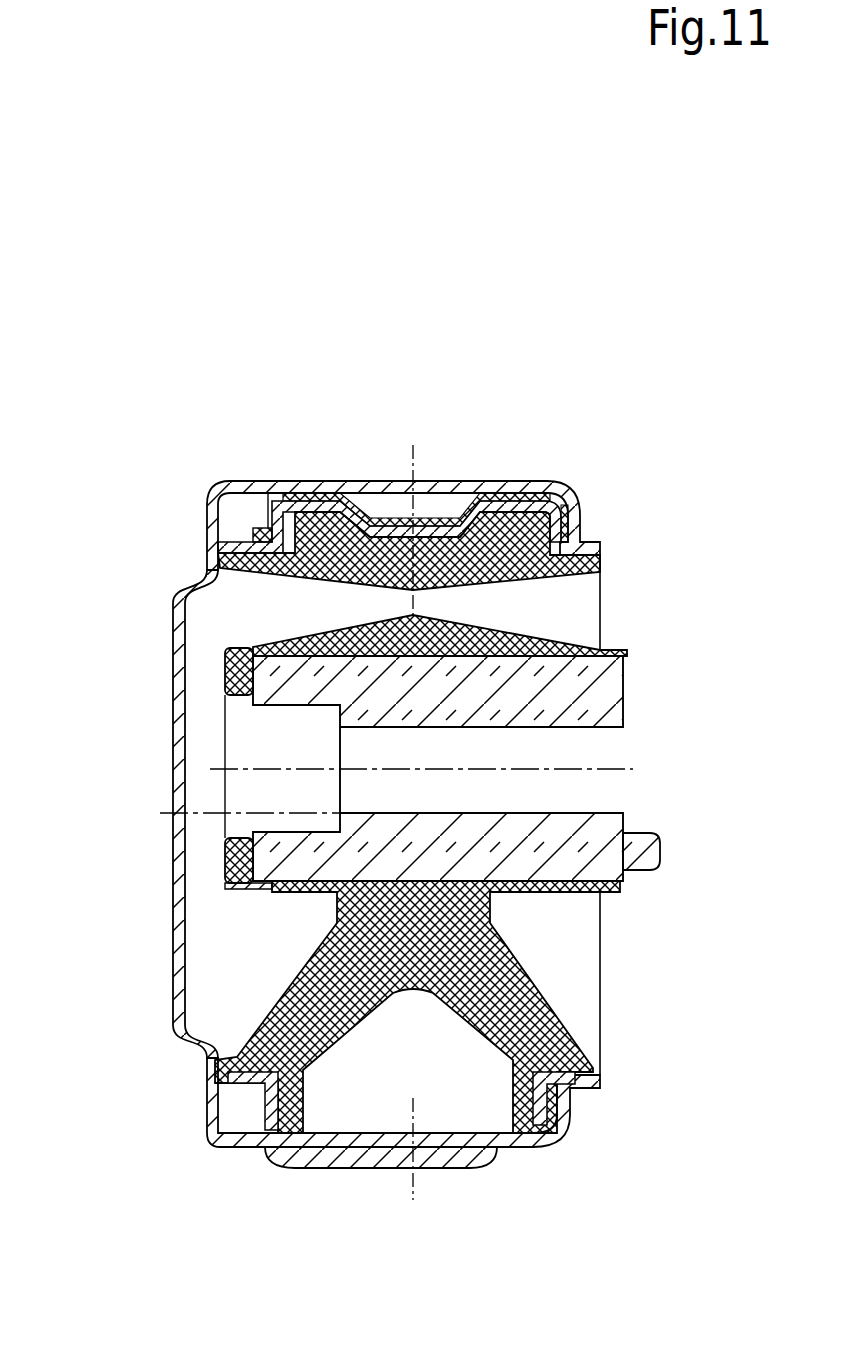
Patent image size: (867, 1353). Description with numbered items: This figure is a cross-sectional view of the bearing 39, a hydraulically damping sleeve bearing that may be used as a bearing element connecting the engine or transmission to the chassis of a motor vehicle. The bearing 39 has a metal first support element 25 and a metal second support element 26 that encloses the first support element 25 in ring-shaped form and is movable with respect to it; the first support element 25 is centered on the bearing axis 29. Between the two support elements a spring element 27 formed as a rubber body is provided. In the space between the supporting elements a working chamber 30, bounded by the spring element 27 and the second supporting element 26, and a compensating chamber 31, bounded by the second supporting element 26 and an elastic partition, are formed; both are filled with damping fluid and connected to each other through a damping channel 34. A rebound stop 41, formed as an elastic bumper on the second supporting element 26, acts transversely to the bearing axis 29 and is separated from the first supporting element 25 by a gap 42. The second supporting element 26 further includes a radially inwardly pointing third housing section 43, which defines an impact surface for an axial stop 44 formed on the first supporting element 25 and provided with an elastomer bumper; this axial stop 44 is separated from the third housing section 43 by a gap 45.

The bearing 39 is at (514, 412).
The second support element 26 is at (566, 511).
The third housing section 43 is at (178, 942).
The compensating chamber 31 is at (395, 508).
The damping channel 34 is at (243, 515).
The rebound stop 41 is at (300, 580).
The gap 42 is at (600, 591).
The first support element 25 is at (607, 707).
The bearing axis 29 is at (609, 757).
The axial stop 44 is at (230, 680).
The gap 45 is at (225, 860).
The spring element 27 is at (517, 1003).
The working chamber 30 is at (377, 1107).